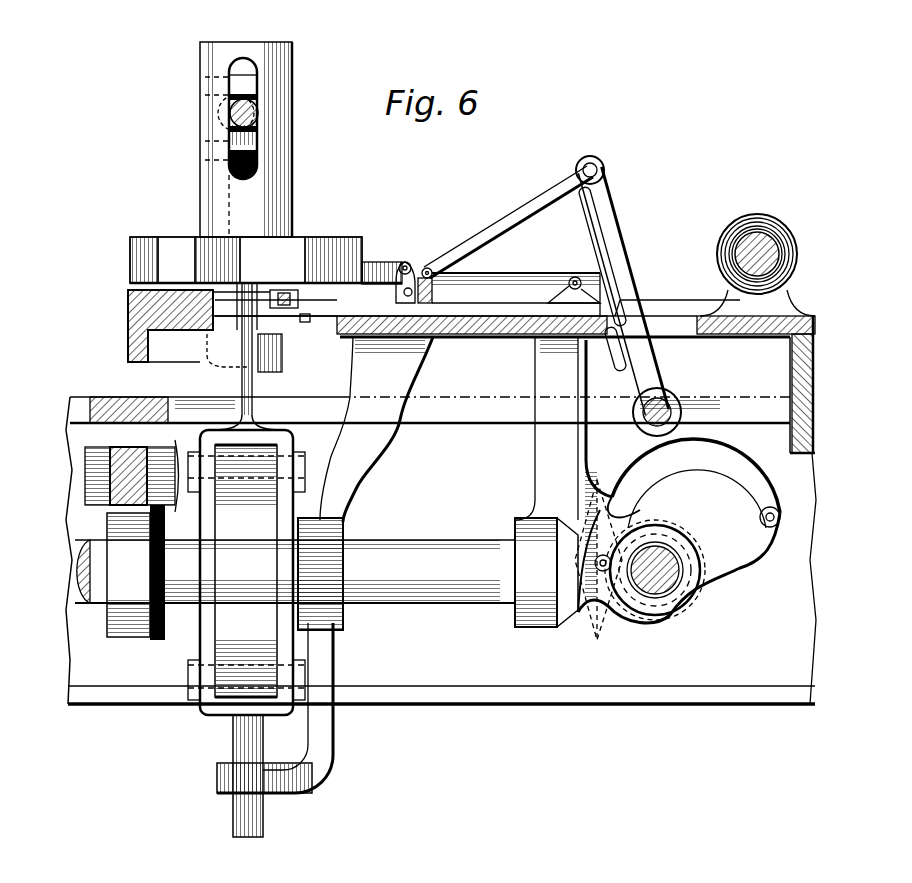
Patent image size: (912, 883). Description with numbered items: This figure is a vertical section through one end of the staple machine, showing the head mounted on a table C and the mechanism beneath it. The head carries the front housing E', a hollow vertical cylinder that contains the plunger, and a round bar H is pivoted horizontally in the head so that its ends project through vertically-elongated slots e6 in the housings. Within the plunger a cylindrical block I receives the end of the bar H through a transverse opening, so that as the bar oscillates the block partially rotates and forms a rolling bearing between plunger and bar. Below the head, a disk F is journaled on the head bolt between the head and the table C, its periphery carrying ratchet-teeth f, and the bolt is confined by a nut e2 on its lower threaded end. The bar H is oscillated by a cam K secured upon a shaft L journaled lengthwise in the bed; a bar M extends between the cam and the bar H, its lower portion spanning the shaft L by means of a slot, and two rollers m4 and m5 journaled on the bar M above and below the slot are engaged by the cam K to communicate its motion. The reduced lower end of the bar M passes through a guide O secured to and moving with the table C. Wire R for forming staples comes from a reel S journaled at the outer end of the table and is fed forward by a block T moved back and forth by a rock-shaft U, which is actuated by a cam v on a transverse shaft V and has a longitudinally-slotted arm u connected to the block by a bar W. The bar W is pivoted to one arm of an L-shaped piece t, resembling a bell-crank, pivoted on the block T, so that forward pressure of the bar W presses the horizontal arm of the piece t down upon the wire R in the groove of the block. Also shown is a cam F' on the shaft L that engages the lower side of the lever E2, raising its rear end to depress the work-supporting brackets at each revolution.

The table C is at (130, 322).
The wire R is at (676, 314).
The reel S is at (740, 246).
The front housing E' is at (234, 139).
The vertically-elongated slot e6 is at (245, 58).
The round bar H is at (258, 113).
The cylindrical block I is at (258, 100).
The disk F is at (249, 260).
The ratchet-teeth f is at (247, 260).
The bar M is at (254, 392).
The nut e2 is at (283, 355).
The block T is at (398, 272).
The L-shaped piece t is at (415, 257).
The bar W is at (496, 222).
The longitudinally-slotted arm u is at (626, 250).
The rock-shaft U is at (660, 406).
The cam v is at (677, 539).
The transverse shaft V is at (655, 570).
The cam K is at (246, 572).
The roller m4 is at (246, 472).
The roller m5 is at (246, 680).
The shaft L is at (78, 578).
The cam F' is at (128, 575).
The bar E2 is at (112, 505).
The guide O is at (285, 778).